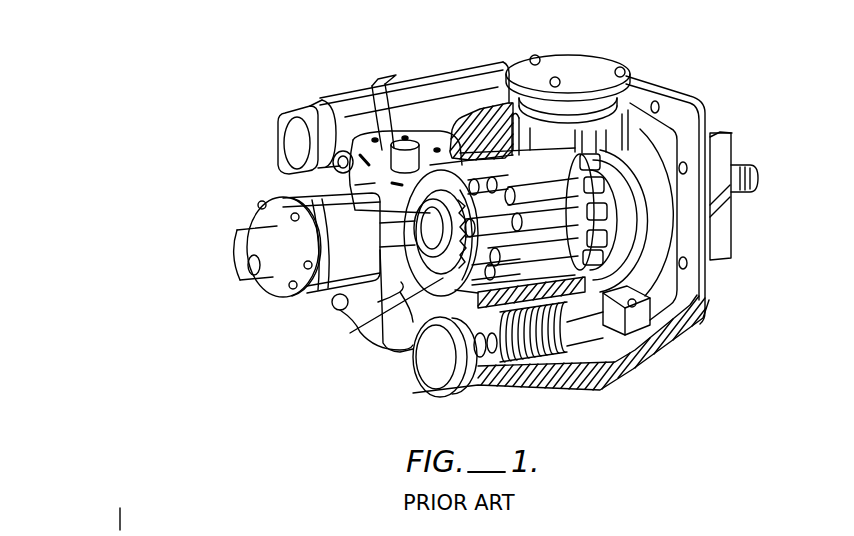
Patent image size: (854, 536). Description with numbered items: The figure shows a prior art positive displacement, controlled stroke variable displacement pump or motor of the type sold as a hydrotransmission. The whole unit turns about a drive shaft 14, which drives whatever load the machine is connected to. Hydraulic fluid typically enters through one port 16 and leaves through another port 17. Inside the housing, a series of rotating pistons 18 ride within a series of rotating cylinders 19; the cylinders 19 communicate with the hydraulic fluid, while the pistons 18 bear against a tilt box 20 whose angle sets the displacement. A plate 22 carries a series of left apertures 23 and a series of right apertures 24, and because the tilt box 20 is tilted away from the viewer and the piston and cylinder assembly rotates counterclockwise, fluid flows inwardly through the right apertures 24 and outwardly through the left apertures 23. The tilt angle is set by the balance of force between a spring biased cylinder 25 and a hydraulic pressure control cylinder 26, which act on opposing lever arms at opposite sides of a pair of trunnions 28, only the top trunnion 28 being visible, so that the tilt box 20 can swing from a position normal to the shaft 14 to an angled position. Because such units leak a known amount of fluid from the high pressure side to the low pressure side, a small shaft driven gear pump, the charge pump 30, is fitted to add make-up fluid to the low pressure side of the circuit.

The drive shaft 14 is at (744, 165).
The port 16 is at (384, 362).
The port 17 is at (370, 100).
The rotating pistons 18 is at (497, 175).
The rotating cylinders 19 is at (430, 168).
The tilt box 20 is at (624, 192).
The plate 22 is at (331, 157).
The left apertures 23 is at (372, 192).
The right apertures 24 is at (360, 330).
The spring biased cylinder 25 is at (487, 372).
The hydraulic pressure control cylinder 26 is at (317, 105).
The trunnion 28 is at (578, 77).
The charge pump 30 is at (244, 268).